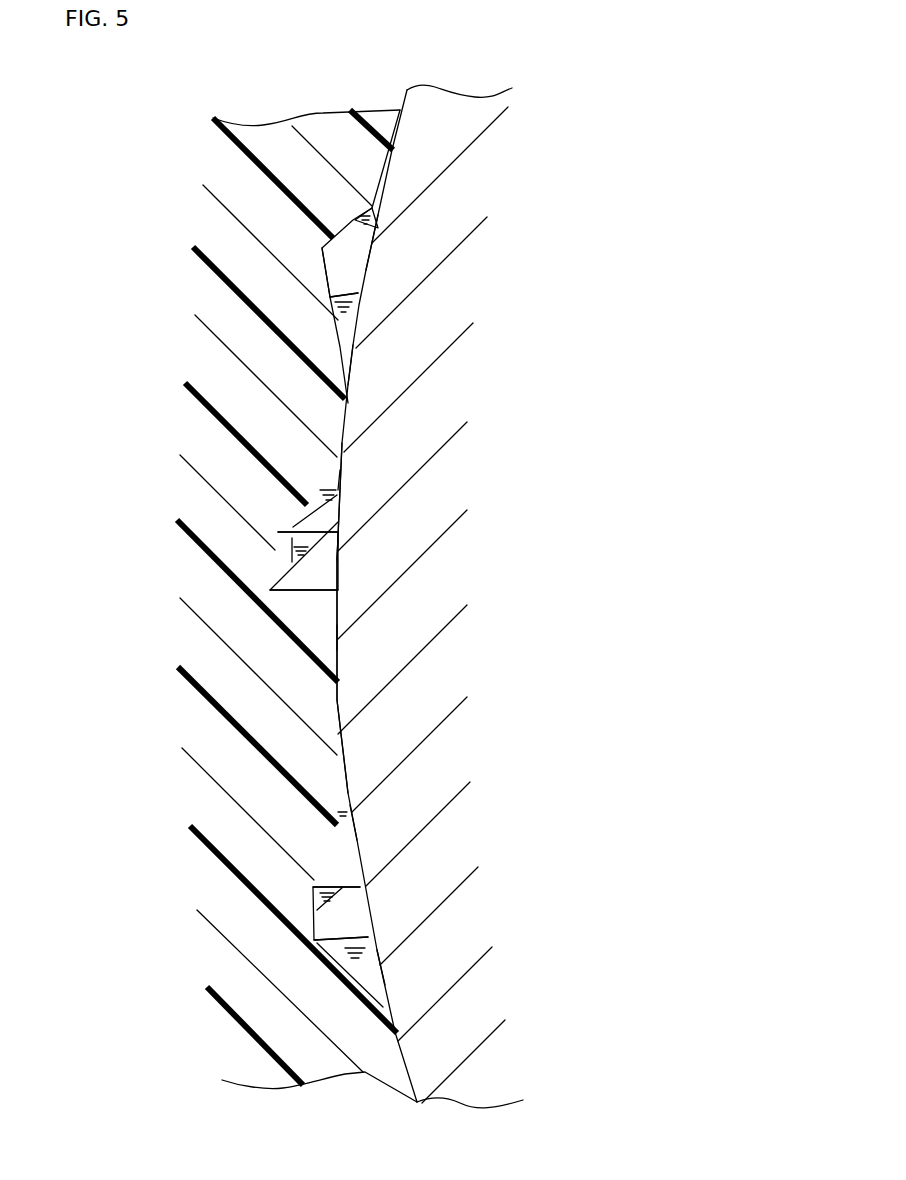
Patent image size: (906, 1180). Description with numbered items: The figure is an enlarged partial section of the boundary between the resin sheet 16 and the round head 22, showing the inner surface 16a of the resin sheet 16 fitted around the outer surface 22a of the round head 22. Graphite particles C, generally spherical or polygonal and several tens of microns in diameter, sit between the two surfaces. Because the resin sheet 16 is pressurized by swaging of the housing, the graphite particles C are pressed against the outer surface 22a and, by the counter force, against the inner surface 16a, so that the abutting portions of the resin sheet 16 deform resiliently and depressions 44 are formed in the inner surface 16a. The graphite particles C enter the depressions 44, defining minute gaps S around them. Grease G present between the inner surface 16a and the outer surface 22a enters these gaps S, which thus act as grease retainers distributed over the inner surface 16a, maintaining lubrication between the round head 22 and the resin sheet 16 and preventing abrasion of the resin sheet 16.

The resin sheet 16 is at (272, 112).
The round head 22 is at (458, 88).
The inner surface 16a is at (390, 162).
The outer surface 22a is at (345, 757).
The depressions 44 is at (345, 330).
The gaps S is at (370, 215).
The grease G is at (353, 313).
The graphite particles C is at (343, 273).